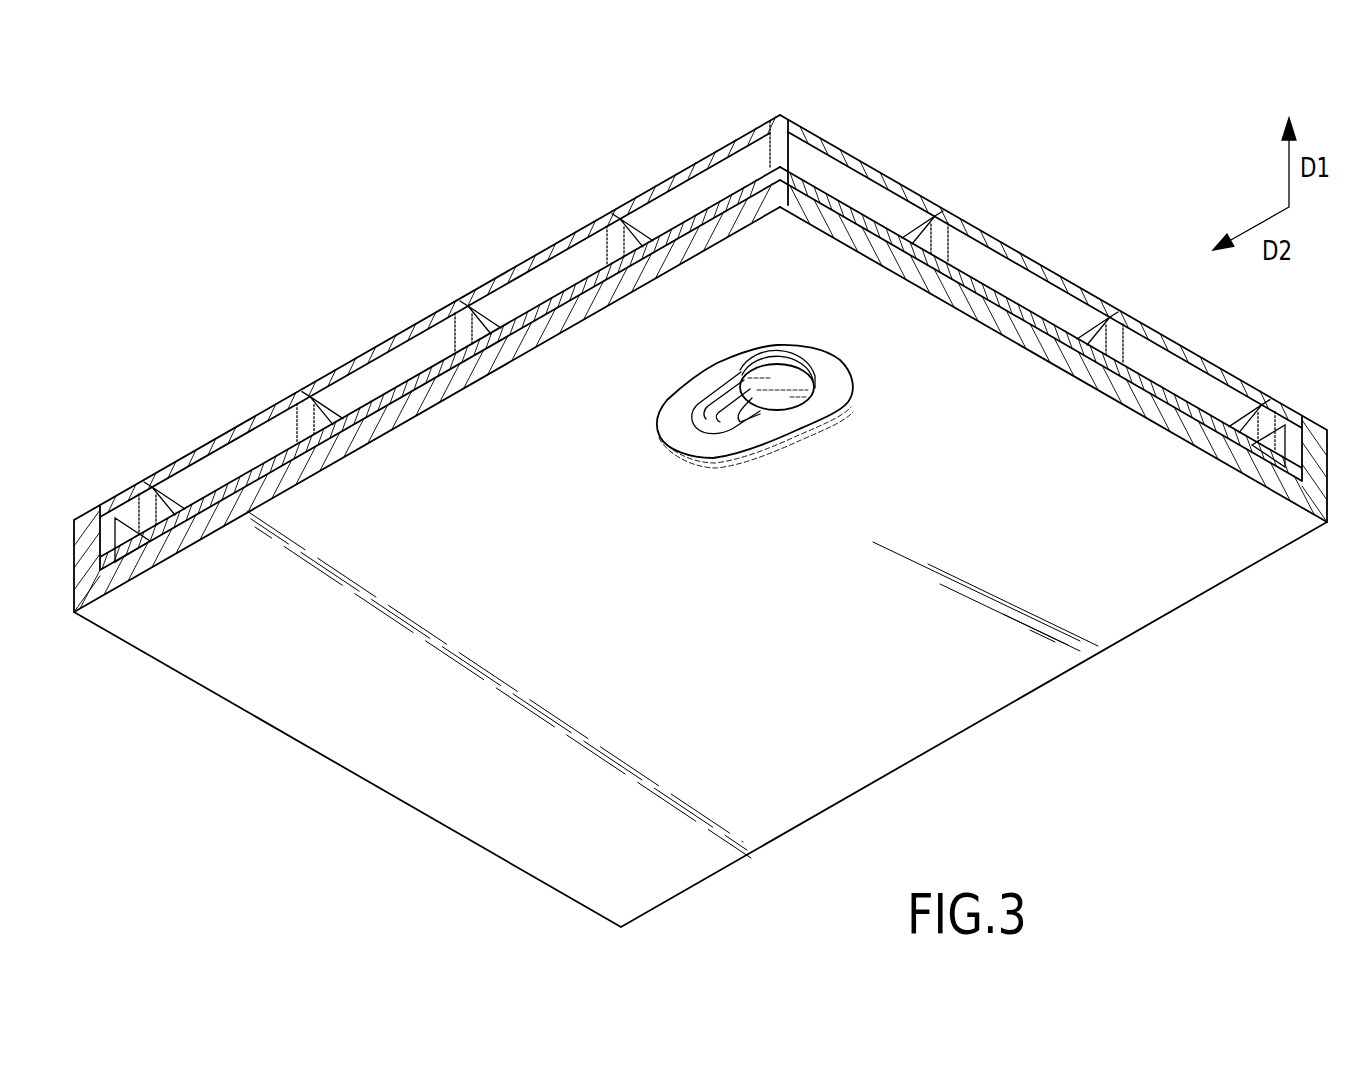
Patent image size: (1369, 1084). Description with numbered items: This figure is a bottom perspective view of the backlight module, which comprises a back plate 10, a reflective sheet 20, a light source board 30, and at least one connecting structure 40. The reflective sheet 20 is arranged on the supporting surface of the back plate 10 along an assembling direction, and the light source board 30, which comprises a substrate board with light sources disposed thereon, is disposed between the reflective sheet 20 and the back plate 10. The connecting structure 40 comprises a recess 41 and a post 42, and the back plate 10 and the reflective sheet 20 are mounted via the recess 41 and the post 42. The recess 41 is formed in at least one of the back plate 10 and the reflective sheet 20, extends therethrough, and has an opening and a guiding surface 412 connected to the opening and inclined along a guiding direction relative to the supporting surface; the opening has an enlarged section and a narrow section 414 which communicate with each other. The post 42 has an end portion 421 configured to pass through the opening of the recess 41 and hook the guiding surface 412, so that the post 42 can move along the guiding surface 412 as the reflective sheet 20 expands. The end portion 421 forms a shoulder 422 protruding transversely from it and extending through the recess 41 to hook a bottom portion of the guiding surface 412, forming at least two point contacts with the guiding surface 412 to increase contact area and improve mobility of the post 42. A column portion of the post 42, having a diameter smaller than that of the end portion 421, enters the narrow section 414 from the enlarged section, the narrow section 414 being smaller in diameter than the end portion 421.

The back plate 10 is at (1036, 716).
The reflective sheet 20 is at (842, 127).
The light source board 30 is at (974, 280).
The connecting structure 40 is at (757, 440).
The recess 41 is at (707, 461).
The post 42 is at (794, 410).
The guiding surface 412 is at (740, 442).
The narrow section 414 is at (720, 417).
The end portion 421 is at (775, 398).
The shoulder 422 is at (747, 373).